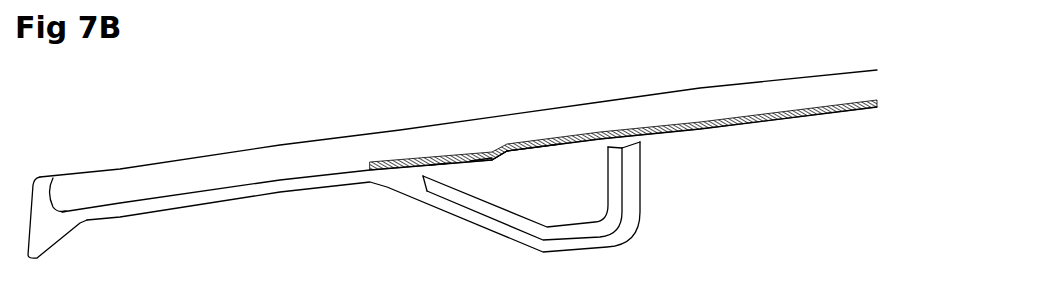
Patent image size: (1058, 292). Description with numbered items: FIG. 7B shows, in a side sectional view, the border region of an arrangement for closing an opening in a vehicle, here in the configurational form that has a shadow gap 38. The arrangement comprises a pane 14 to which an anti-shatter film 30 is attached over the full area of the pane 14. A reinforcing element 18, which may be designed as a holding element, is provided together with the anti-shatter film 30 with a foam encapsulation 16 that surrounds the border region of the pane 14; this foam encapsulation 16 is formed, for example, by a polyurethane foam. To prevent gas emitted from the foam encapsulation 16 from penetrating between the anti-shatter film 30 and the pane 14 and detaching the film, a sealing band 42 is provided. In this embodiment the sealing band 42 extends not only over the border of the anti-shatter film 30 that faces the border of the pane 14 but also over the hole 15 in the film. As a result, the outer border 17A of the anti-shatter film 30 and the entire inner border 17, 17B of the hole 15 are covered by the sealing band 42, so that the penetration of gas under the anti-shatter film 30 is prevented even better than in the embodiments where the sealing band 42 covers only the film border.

The pane 14 is at (773, 97).
The hole 15 is at (566, 126).
The anti-shatter film 30 is at (463, 156).
The inner border 17 is at (598, 141).
The outer border 17A is at (440, 157).
The inner border 17B is at (481, 152).
The foam encapsulation 16 is at (407, 178).
The reinforcing element 18 is at (457, 193).
The sealing band 42 is at (530, 147).
The shadow gap 38 is at (651, 144).